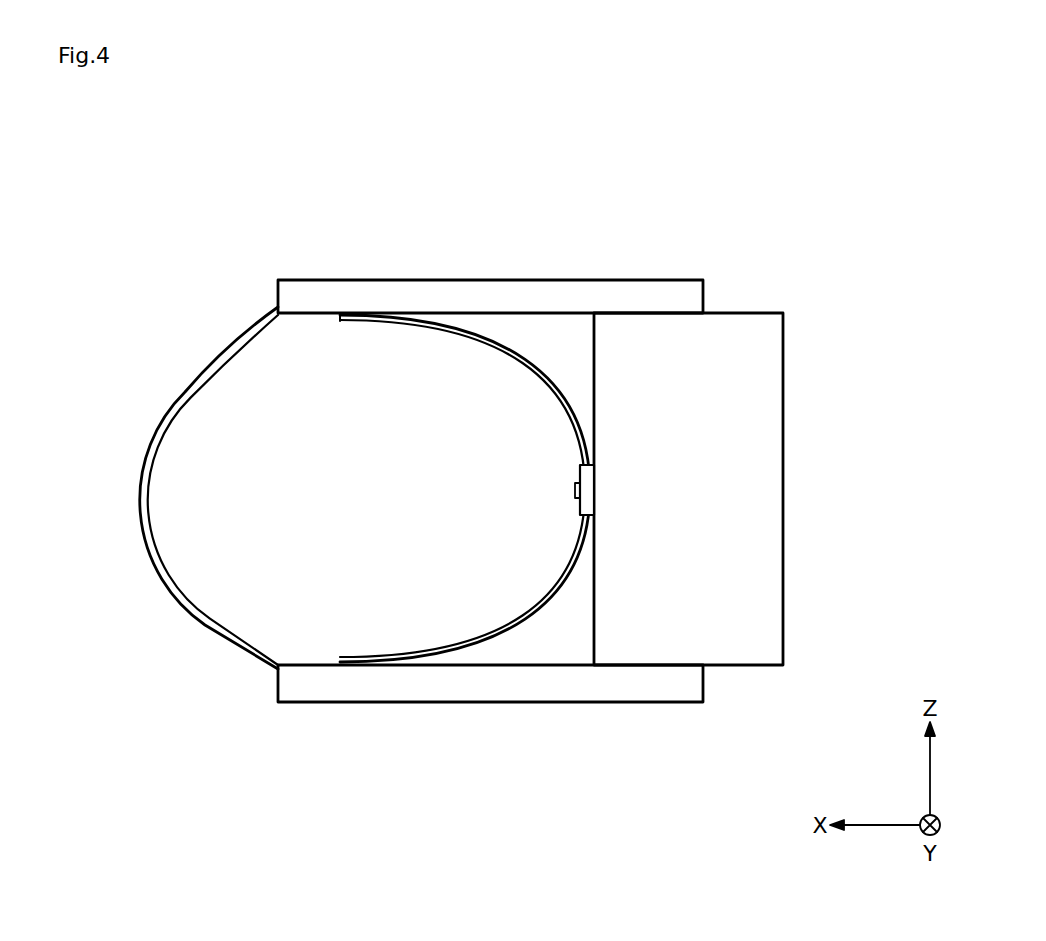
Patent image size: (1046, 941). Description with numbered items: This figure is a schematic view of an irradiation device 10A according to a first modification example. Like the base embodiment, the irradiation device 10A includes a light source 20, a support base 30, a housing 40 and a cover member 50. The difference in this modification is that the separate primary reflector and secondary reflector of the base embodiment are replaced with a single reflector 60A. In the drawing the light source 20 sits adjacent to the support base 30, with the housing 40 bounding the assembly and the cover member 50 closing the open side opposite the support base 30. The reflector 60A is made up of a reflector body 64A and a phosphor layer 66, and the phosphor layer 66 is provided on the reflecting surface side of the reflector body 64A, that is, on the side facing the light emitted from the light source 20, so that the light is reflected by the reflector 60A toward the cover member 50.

The irradiation device 10A is at (209, 241).
The light source 20 is at (580, 467).
The support base 30 is at (775, 494).
The housing 40 is at (640, 290).
The cover member 50 is at (207, 627).
The reflector 60A is at (422, 333).
The reflector body 64A is at (417, 665).
The phosphor layer 66 is at (378, 664).